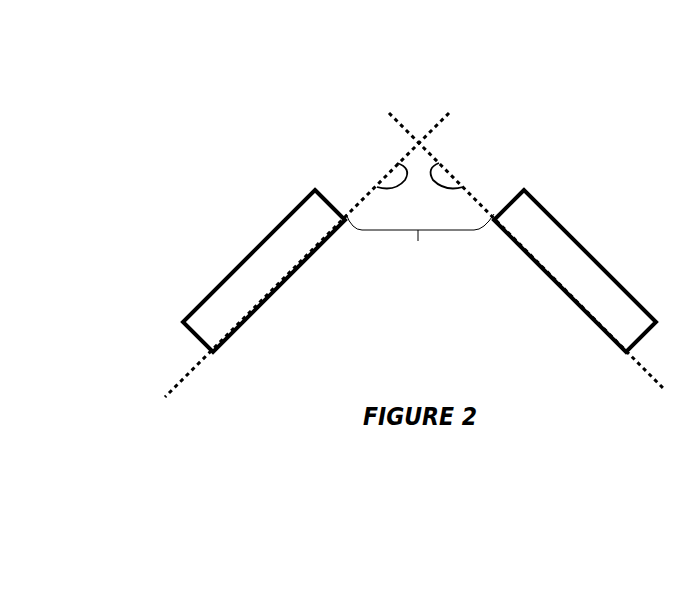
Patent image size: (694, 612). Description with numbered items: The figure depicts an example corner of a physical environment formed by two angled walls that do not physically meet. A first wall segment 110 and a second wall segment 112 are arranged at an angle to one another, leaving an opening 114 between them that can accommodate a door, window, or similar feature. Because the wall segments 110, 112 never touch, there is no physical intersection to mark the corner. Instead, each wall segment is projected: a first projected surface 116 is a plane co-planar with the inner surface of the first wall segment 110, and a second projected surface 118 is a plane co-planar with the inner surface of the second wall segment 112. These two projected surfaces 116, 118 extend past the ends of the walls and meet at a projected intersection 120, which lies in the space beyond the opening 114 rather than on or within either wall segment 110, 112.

The first wall segment 110 is at (275, 287).
The second wall segment 112 is at (558, 287).
The opening 114 is at (420, 243).
The first projected surface 116 is at (377, 187).
The second projected surface 118 is at (460, 187).
The projected intersection 120 is at (421, 143).